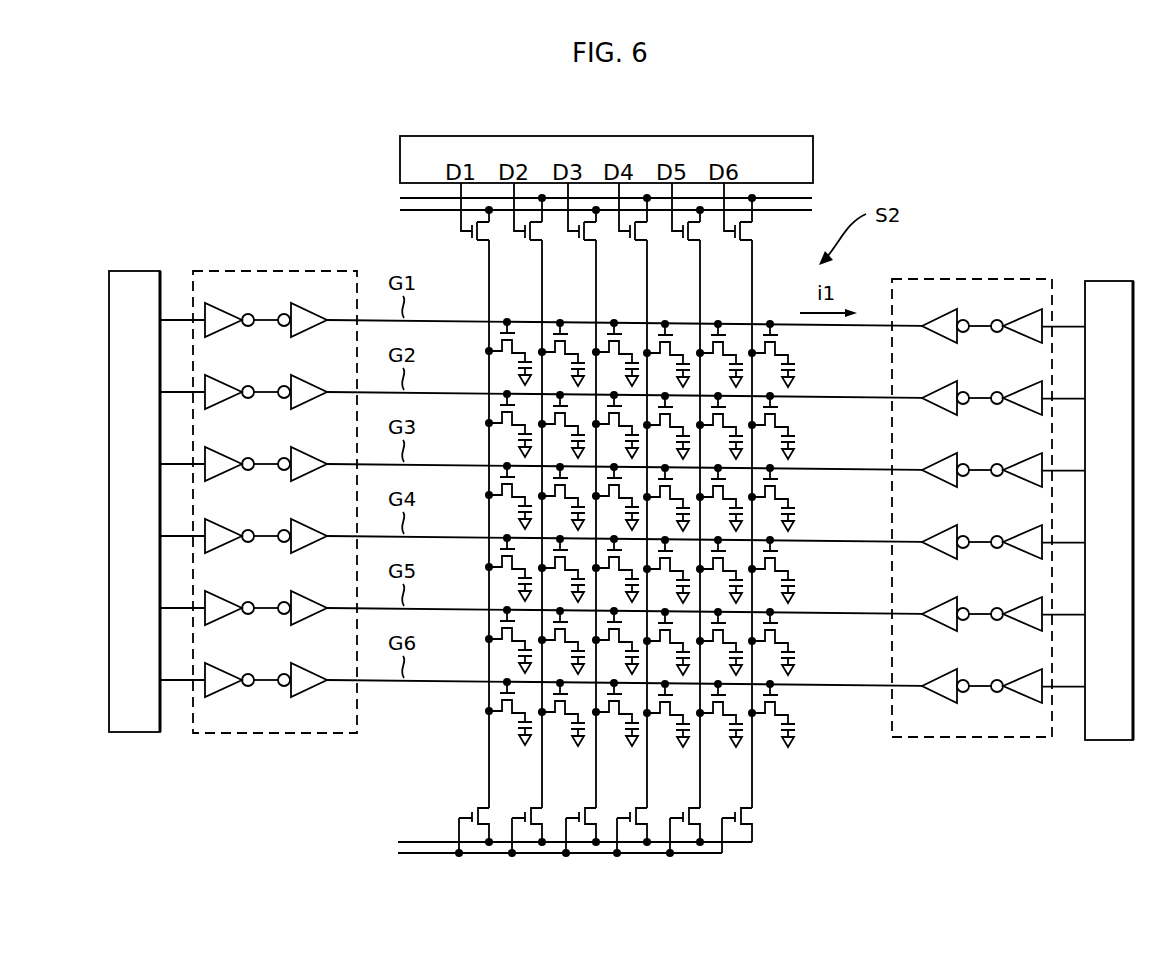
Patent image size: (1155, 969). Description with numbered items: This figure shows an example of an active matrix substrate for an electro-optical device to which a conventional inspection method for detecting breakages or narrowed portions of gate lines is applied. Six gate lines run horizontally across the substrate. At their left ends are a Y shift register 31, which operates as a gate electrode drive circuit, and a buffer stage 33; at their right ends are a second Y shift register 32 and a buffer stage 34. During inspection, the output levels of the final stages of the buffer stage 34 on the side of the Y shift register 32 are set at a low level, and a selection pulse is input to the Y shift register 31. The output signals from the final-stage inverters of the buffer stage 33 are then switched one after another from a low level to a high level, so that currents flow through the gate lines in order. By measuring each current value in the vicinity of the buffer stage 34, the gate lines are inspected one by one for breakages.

The Y shift register 31 is at (141, 271).
The Y shift register 32 is at (1112, 281).
The buffer stage 33 is at (270, 270).
The buffer stage 34 is at (997, 278).